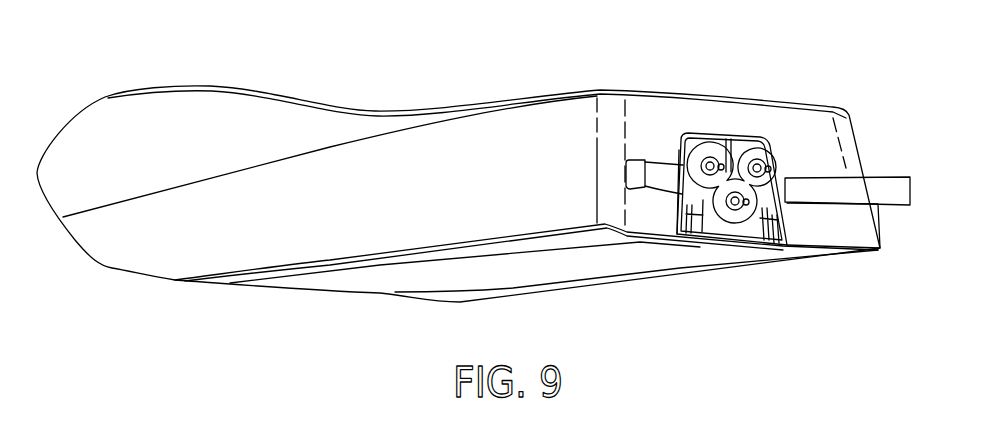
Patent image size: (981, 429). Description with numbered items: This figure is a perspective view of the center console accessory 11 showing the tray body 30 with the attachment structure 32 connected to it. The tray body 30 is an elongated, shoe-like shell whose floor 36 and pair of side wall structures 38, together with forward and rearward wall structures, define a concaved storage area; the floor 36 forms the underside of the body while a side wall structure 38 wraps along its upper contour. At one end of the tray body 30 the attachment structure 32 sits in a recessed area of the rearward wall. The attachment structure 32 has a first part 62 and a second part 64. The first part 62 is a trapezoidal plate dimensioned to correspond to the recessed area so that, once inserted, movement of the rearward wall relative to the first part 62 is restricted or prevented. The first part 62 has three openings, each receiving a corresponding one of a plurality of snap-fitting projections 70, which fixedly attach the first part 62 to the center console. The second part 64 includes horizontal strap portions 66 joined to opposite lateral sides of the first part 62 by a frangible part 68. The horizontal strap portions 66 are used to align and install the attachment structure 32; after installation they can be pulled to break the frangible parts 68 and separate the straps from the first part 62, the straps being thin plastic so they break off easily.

The center console accessory 11 is at (800, 74).
The tray body 30 is at (705, 90).
The attachment structure 32 is at (759, 130).
The floor 36 is at (538, 263).
The side wall structure 38 is at (432, 165).
The first part 62 is at (768, 237).
The second part 64 is at (820, 220).
The horizontal strap portion 66 is at (657, 177).
The frangible part 68 is at (682, 187).
The snap-fitting projection 70 is at (755, 199).